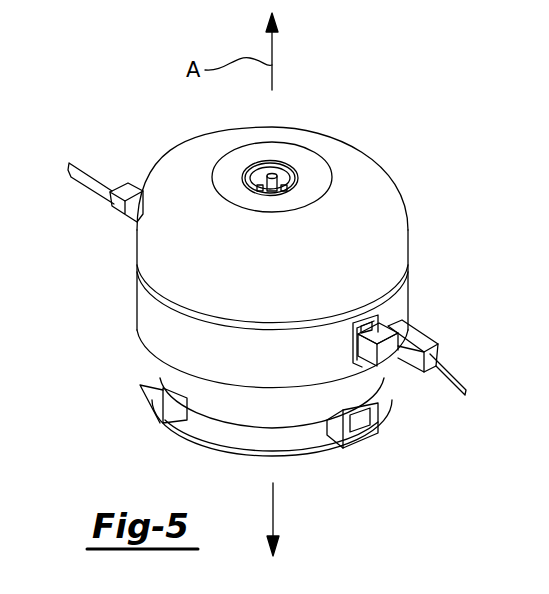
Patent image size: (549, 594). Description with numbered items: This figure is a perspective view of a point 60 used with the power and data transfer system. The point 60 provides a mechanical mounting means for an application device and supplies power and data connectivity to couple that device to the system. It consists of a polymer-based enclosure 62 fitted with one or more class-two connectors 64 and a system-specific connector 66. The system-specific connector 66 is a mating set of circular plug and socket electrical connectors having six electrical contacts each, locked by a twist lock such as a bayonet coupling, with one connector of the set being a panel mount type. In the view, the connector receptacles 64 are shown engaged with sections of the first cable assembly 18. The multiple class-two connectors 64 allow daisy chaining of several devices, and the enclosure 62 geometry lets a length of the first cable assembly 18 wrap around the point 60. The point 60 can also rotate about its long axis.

The first cable assembly 18 is at (90, 183).
The point 60 is at (380, 213).
The polymer-based enclosure 62 is at (398, 304).
The Class 2 connector 64 is at (360, 366).
The system-specific connector 66 is at (284, 167).